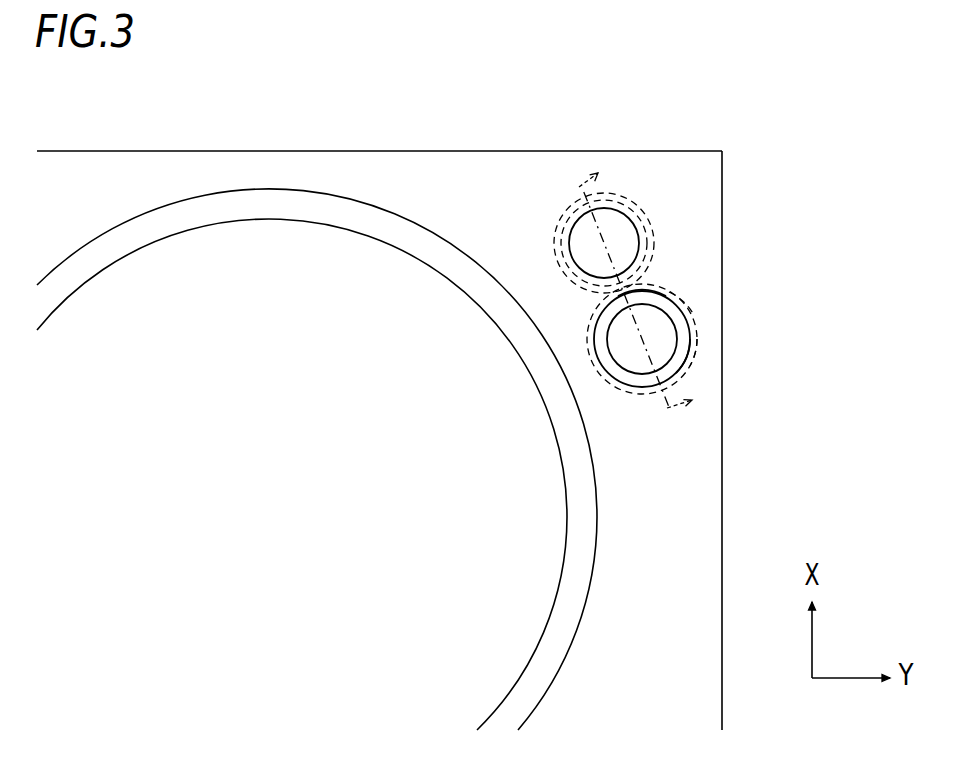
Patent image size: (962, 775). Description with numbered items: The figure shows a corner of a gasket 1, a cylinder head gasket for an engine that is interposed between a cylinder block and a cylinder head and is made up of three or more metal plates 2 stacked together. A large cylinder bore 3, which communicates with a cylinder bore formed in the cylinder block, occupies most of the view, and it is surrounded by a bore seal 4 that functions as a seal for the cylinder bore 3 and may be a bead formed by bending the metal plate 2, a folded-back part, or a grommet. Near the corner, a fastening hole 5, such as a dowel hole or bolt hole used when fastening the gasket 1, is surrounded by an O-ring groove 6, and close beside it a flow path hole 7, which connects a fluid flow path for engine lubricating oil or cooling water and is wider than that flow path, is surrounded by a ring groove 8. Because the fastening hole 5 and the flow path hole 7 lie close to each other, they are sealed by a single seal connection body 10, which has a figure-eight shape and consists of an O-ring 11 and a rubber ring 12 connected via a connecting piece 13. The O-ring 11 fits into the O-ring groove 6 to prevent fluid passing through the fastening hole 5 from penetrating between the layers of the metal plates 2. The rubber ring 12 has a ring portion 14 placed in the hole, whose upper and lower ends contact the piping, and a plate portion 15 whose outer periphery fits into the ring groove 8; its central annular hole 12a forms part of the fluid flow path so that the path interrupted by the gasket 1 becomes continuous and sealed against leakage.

The gasket 1 is at (127, 150).
The metal plate 2 is at (418, 150).
The cylinder bore 3 is at (313, 229).
The bore seal 4 is at (197, 197).
The fastening hole 5 is at (619, 208).
The O-ring groove 6 is at (562, 222).
The flow path hole 7 is at (692, 325).
The ring groove 8 is at (693, 352).
The seal connection body 10 is at (654, 247).
The O-ring 11 is at (637, 208).
The rubber ring 12 is at (686, 370).
The annular hole 12a is at (664, 293).
The connecting piece 13 is at (647, 287).
The ring portion 14 is at (691, 367).
The plate portion 15 is at (689, 311).